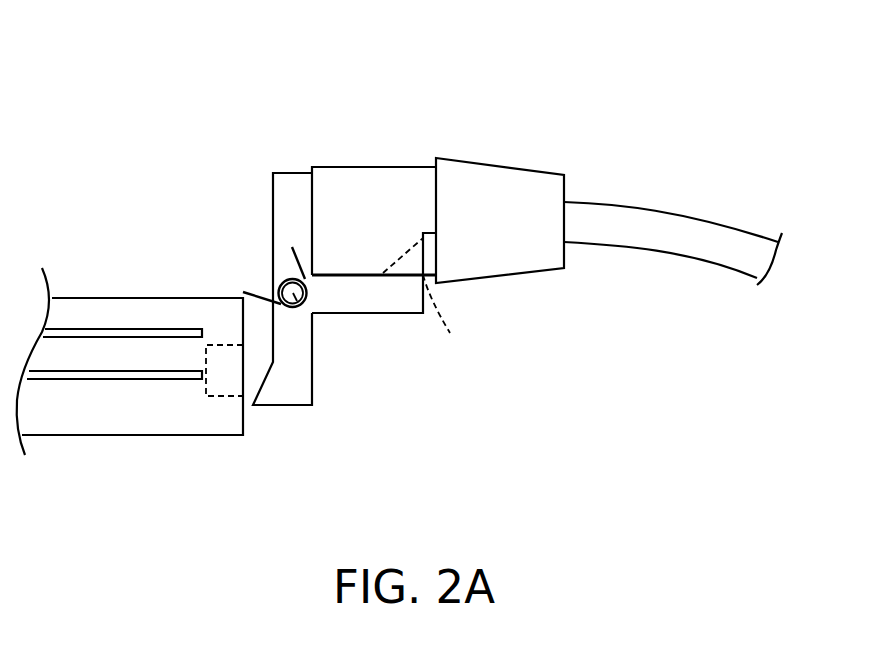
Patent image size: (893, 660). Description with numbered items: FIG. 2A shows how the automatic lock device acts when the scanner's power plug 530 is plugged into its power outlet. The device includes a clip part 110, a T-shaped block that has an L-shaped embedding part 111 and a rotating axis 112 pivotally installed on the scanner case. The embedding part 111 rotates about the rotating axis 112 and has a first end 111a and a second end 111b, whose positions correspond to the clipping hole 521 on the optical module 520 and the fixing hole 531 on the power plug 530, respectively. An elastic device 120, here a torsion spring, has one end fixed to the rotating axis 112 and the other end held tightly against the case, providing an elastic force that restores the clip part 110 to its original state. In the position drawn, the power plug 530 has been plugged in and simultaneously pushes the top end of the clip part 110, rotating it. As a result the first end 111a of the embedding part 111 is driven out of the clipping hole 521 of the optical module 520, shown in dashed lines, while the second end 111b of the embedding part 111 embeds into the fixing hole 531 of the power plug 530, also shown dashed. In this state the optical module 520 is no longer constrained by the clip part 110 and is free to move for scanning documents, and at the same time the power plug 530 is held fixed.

The clip part 110 is at (338, 274).
The embedding part 111 is at (372, 326).
The first end 111a is at (292, 397).
The second end 111b is at (408, 295).
The rotating axis 112 is at (297, 307).
The elastic device 120 is at (258, 292).
The optical module 520 is at (130, 435).
The clipping hole 521 is at (232, 385).
The power plug 530 is at (413, 167).
The fixing hole 531 is at (436, 297).